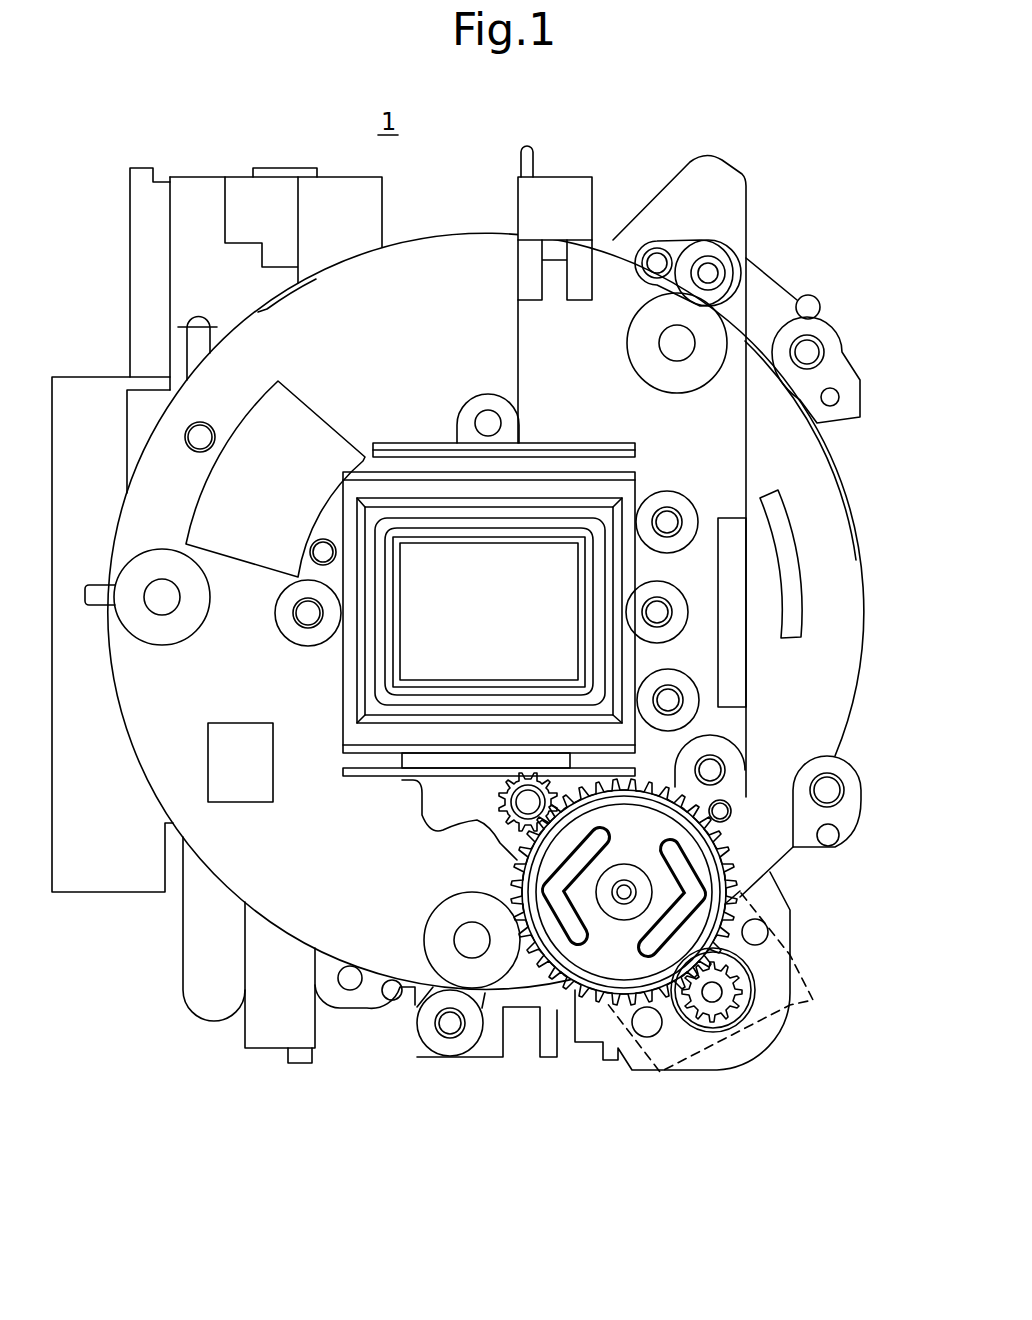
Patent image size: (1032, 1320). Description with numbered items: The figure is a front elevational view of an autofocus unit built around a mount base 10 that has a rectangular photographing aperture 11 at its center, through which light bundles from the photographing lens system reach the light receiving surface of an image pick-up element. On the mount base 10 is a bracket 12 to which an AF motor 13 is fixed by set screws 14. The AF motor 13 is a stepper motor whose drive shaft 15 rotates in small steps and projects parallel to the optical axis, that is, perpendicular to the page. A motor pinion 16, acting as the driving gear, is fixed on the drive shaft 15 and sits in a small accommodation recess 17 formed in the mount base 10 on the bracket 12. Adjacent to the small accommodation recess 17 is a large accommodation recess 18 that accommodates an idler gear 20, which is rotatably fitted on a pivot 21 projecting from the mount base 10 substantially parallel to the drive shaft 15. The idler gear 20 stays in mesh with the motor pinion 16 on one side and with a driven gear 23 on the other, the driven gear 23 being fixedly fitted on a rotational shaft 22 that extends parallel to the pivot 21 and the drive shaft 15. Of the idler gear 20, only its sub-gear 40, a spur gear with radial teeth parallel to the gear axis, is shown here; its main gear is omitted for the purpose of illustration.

The mount base 10 is at (788, 452).
The photographing aperture 11 is at (563, 593).
The bracket 12 is at (767, 893).
The AF motor 13 is at (773, 977).
The set screws 14 is at (755, 932).
The drive shaft 15 is at (716, 1015).
The motor pinion 16 is at (710, 1000).
The small accommodation recess 17 is at (733, 1023).
The large accommodation recess 18 is at (540, 957).
The idler gear 20 is at (583, 952).
The sub-gear 40 is at (614, 964).
The pivot 21 is at (623, 893).
The rotational shaft 22 is at (520, 790).
The driven gear 23 is at (505, 815).